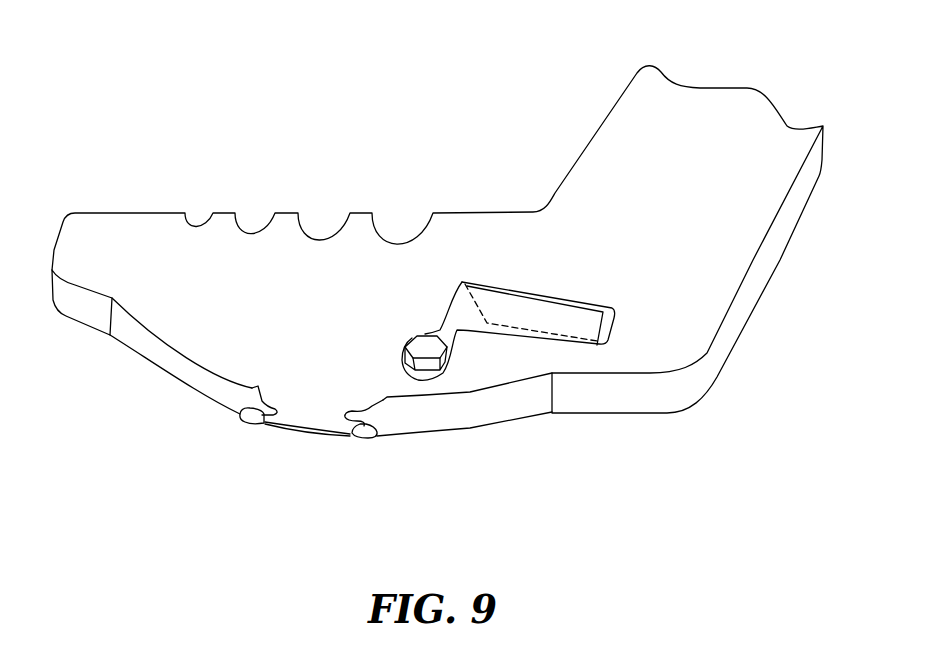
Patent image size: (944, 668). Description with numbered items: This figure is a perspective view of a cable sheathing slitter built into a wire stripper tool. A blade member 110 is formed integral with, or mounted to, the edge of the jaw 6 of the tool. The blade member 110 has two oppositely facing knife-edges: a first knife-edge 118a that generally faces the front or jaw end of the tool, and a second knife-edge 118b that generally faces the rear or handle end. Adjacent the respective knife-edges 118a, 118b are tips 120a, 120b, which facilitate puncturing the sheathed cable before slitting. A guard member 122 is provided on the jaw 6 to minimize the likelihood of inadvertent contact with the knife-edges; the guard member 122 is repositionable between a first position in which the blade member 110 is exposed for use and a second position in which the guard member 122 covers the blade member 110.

The jaw 6 is at (688, 290).
The blade member 110 is at (297, 423).
The first knife-edge 118a is at (273, 408).
The second knife-edge 118b is at (355, 412).
The tip 120a is at (243, 418).
The tip 120b is at (363, 432).
The guard member 122 is at (521, 273).